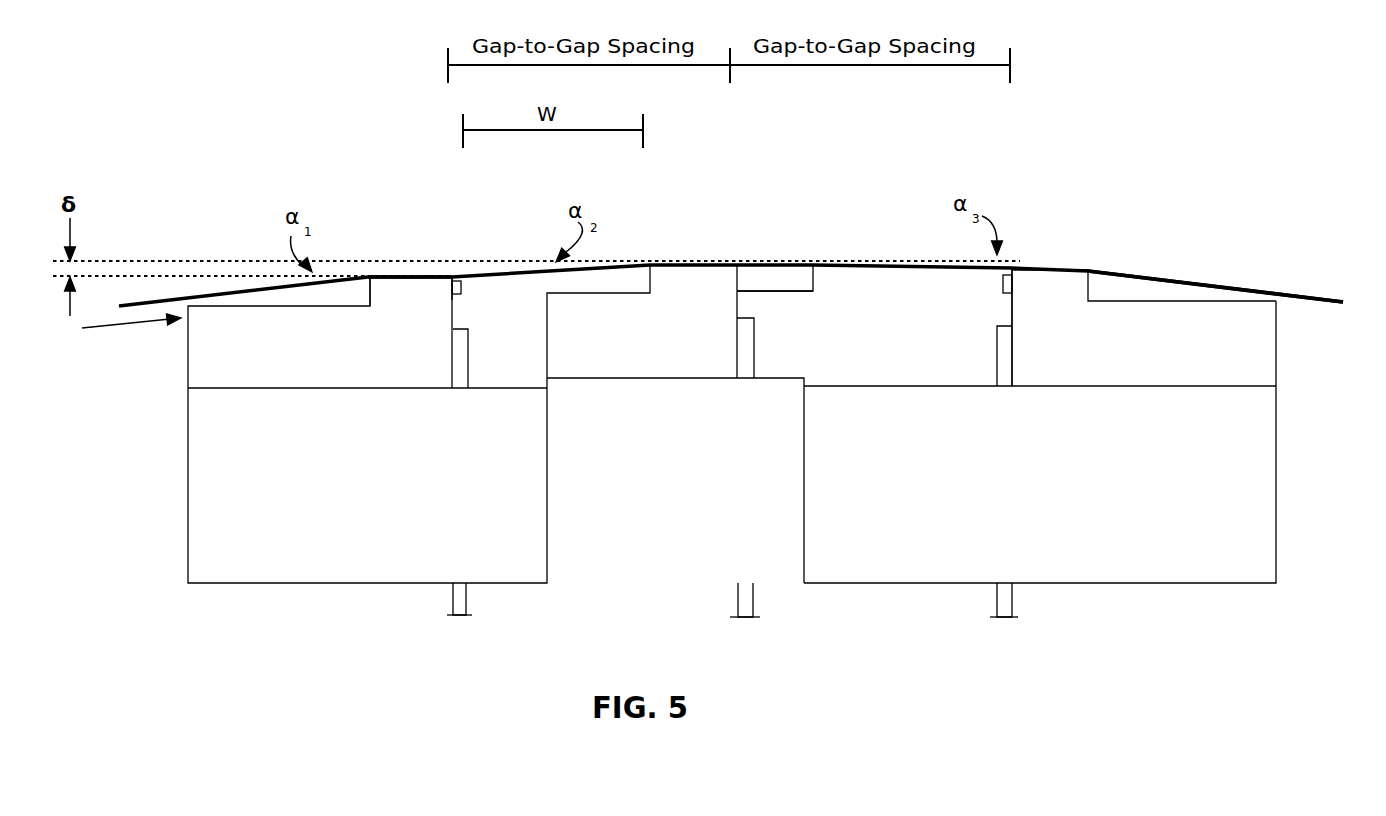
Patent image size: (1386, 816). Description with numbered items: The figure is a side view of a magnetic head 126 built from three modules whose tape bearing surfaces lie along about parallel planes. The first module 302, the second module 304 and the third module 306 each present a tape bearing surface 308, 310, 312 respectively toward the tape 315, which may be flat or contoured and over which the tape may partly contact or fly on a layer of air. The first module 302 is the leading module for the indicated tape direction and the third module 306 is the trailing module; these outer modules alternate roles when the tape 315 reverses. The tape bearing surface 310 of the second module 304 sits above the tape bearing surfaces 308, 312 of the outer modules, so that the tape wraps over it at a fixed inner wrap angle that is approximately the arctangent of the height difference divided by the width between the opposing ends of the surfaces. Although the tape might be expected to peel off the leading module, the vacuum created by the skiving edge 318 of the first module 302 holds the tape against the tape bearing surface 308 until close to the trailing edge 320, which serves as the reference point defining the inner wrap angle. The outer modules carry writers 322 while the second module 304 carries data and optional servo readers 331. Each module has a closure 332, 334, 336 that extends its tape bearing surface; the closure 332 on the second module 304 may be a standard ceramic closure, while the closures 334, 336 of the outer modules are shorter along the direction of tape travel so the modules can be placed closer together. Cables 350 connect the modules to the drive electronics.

The magnetic head 126 is at (350, 134).
The first module 302 is at (188, 355).
The second module 304 is at (625, 293).
The third module 306 is at (1276, 350).
The tape bearing surface 308 is at (420, 262).
The tape bearing surface 310 is at (679, 250).
The tape bearing surface 312 is at (1045, 256).
The tape 315 is at (1140, 277).
The skiving edge 318 is at (352, 290).
The trailing edge 320 is at (483, 282).
The writers 322 is at (452, 262).
The data and optional servo readers 331 is at (737, 250).
The closure 332 is at (782, 293).
The closure 334 is at (462, 292).
The closure 336 is at (1003, 283).
The cables 350 is at (468, 600).